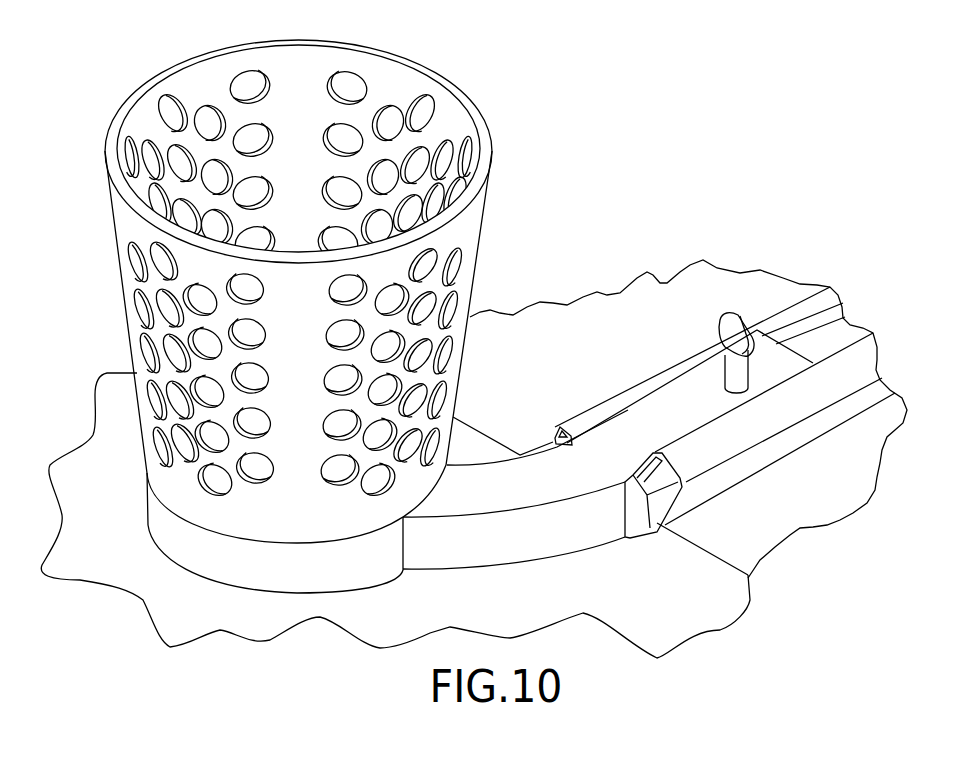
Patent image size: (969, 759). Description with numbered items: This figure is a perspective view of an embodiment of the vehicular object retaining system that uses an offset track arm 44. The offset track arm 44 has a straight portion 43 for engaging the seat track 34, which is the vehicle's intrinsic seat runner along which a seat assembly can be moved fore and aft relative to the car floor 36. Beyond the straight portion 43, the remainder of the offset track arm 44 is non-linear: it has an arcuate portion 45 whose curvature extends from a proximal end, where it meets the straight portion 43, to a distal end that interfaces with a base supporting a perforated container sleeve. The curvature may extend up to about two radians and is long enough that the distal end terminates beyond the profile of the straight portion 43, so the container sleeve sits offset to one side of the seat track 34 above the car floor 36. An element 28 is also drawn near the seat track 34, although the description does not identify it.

The locking pin 28 is at (722, 318).
The seat track 34 is at (745, 427).
The car floor 36 is at (765, 516).
The straight portion 43 is at (645, 428).
The offset track arm 44 is at (523, 543).
The arcuate portion 45 is at (483, 506).